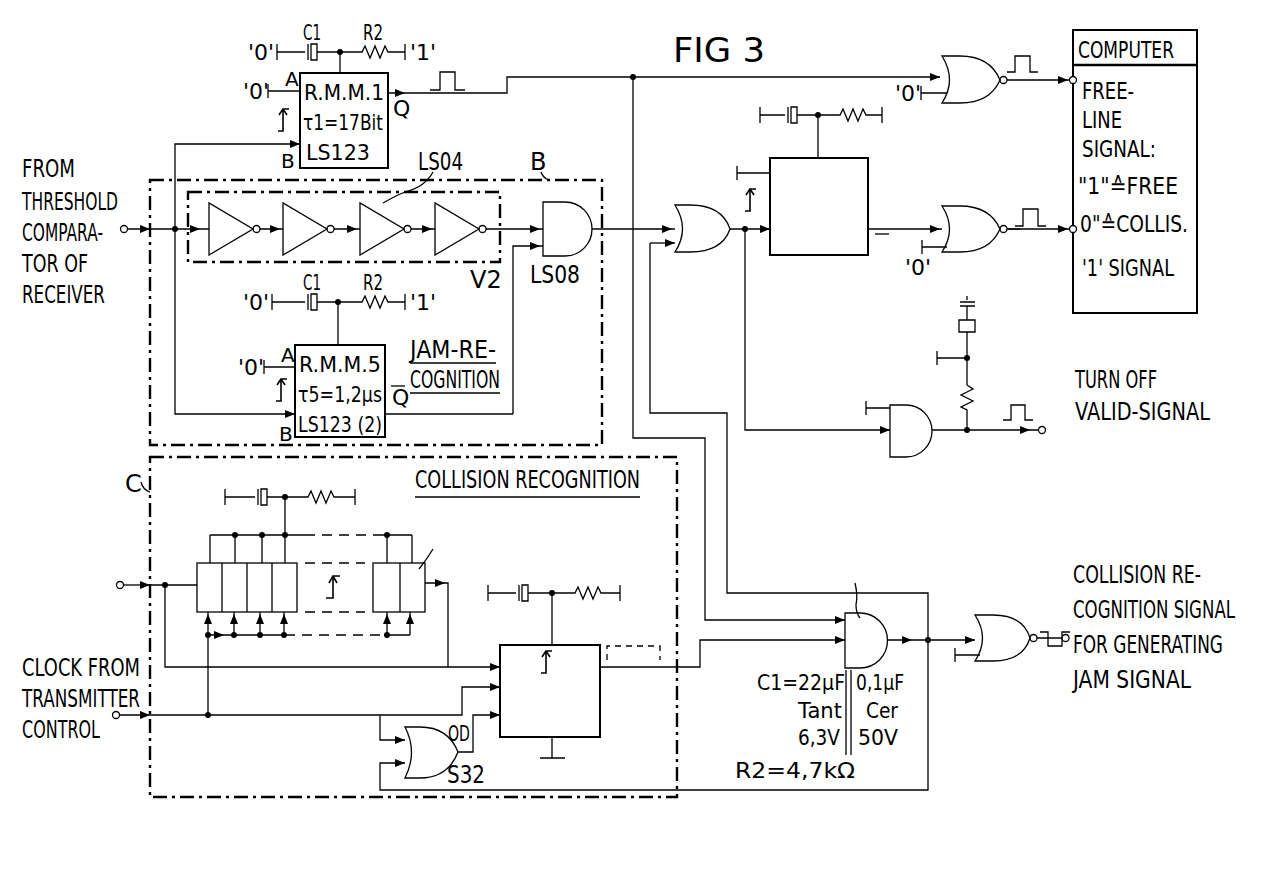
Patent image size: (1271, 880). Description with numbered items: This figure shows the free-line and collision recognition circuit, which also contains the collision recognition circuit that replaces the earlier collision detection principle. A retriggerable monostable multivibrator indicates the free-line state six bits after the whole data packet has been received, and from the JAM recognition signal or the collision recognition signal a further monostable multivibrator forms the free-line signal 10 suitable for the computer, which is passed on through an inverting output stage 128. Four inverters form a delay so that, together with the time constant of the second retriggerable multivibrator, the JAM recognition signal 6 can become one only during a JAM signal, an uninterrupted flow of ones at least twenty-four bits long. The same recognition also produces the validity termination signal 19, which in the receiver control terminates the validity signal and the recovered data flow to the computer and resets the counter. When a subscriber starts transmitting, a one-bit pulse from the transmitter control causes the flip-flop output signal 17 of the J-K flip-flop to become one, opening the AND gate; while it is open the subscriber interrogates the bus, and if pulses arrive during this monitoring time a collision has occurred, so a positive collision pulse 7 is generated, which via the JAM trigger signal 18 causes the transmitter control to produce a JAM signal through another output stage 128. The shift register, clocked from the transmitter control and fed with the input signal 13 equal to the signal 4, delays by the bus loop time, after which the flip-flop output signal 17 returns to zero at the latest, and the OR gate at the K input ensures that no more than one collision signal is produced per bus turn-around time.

The NOR gate inverting driver 128 is at (989, 358).
The JAM recognition signal 6 is at (650, 222).
The collision recognition pulse 7 is at (805, 170).
The free-line signal for the computer 10 is at (1019, 250).
The transmit data input X13 13 is at (306, 590).
The input signal 4 is at (125, 590).
The flip-flop output signal 17 is at (653, 671).
The JAM trigger signal 18 is at (1006, 668).
The validity termination signal 19 is at (937, 384).